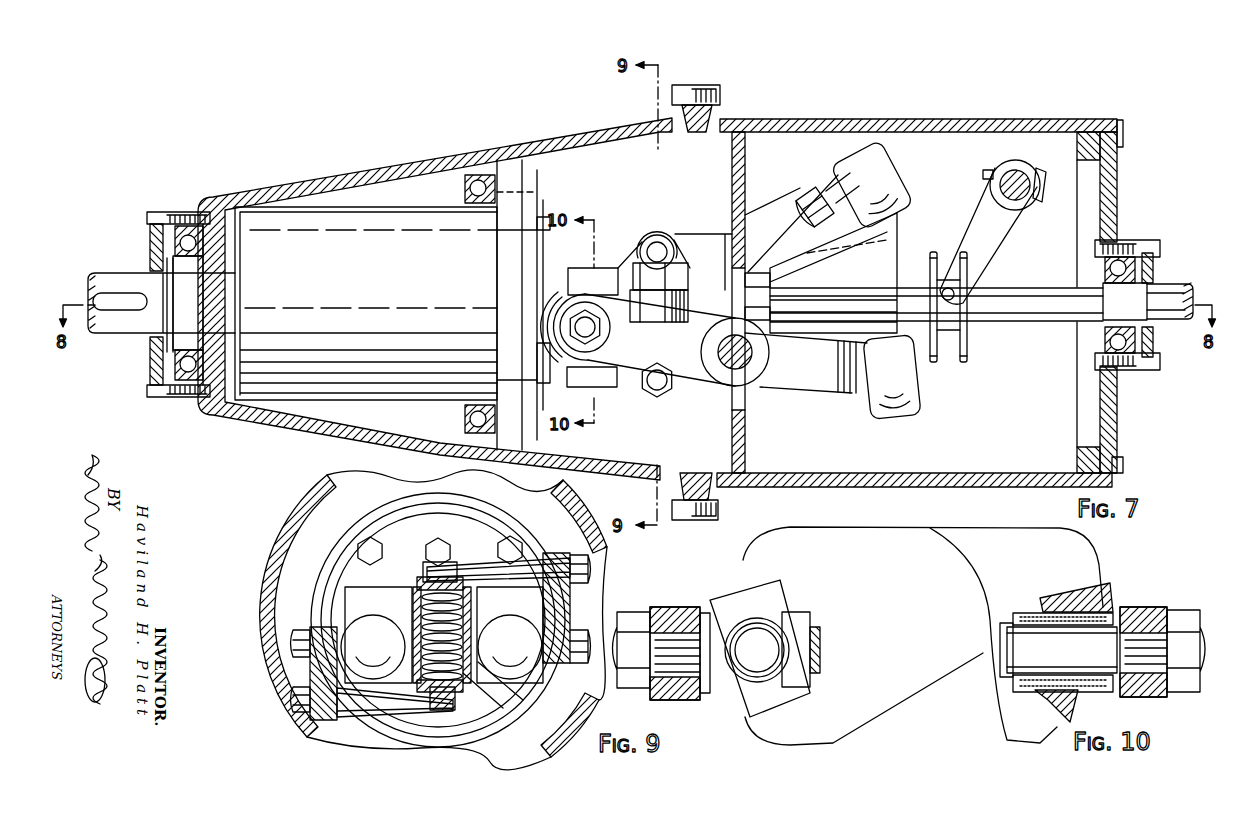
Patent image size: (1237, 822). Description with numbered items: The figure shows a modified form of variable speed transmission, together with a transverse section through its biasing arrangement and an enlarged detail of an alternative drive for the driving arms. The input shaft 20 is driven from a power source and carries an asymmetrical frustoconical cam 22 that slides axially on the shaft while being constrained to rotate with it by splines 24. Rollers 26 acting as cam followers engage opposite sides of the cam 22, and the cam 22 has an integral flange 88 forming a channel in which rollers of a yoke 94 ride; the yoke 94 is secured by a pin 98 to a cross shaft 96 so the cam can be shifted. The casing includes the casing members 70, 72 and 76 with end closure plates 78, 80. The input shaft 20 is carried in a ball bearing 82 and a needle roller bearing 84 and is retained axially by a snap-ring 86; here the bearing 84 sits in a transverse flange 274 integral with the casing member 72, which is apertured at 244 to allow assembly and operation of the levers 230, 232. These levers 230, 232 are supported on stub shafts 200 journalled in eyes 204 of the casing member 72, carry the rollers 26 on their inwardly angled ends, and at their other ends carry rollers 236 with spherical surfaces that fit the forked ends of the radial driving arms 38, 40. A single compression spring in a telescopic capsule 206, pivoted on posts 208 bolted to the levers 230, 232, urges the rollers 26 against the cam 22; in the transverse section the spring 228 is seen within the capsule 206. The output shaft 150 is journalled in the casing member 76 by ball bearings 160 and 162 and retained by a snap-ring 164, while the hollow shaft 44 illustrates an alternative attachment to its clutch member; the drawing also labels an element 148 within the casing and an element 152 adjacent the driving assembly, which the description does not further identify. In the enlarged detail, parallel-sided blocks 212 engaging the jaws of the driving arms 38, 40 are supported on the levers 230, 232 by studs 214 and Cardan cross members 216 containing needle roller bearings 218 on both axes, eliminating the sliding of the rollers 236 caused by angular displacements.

In FIG. 7, the input shaft 20 is at (1160, 292).
In FIG. 7, the asymmetrical frustoconical cam 22 is at (888, 238).
In FIG. 7, the splines 24 is at (1018, 288).
In FIG. 7, the rollers 26 is at (858, 160).
In FIG. 7, the radial driving arm 38 is at (600, 278).
In FIG. 9, the radial driving arm 38 is at (360, 603).
In FIG. 10, the radial driving arm 38 is at (747, 555).
In FIG. 9, the radial driving arm 40 is at (523, 600).
In FIG. 10, the radial driving arm 40 is at (1078, 558).
In FIG. 7, the hollow shaft 44 is at (550, 355).
In FIG. 7, the casing member 70 is at (1115, 178).
In FIG. 7, the casing member 72 is at (950, 132).
In FIG. 7, the casing member 76 is at (412, 162).
In FIG. 9, the casing member 76 is at (318, 491).
In FIG. 7, the end closure plate 78 is at (1140, 243).
In FIG. 7, the end closure plate 80 is at (168, 212).
In FIG. 7, the ball bearing 82 is at (1150, 264).
In FIG. 7, the needle roller bearing 84 is at (760, 283).
In FIG. 7, the snap-ring 86 is at (1142, 301).
In FIG. 7, the integral flange 88 is at (932, 280).
In FIG. 7, the yoke 94 is at (1010, 226).
In FIG. 7, the cross shaft 96 is at (1017, 167).
In FIG. 7, the pin 98 is at (1038, 203).
In FIG. 7, the motor 148 is at (313, 220).
In FIG. 7, the output shaft 150 is at (139, 275).
In FIG. 7, the end plate 152 is at (528, 417).
In FIG. 9, the end plate 152 is at (397, 523).
In FIG. 7, the ball bearing 160 is at (152, 241).
In FIG. 7, the ball bearing 162 is at (467, 190).
In FIG. 9, the ball bearing 162 is at (372, 519).
In FIG. 7, the snap-ring 164 is at (170, 270).
In FIG. 7, the stub shaft 200 is at (718, 355).
In FIG. 7, the eye 204 is at (726, 228).
In FIG. 7, the telescopic capsule 206 is at (650, 300).
In FIG. 9, the telescopic capsule 206 is at (425, 585).
In FIG. 7, the post 208 is at (660, 240).
In FIG. 9, the post 208 is at (487, 565).
In FIG. 10, the parallel-sided block 212 is at (737, 593).
In FIG. 10, the stud 214 is at (690, 633).
In FIG. 10, the Cardan cross member 216 is at (747, 687).
In FIG. 10, the needle roller bearings 218 is at (752, 668).
In FIG. 9, the spring 228 is at (420, 600).
In FIG. 7, the lever 230 is at (807, 380).
In FIG. 9, the lever 230 is at (310, 668).
In FIG. 10, the lever 230 is at (672, 693).
In FIG. 7, the lever 232 is at (797, 178).
In FIG. 9, the lever 232 is at (575, 613).
In FIG. 10, the lever 232 is at (602, 615).
In FIG. 7, the roller 236 is at (557, 300).
In FIG. 9, the roller 236 is at (310, 695).
In FIG. 7, the aperture 244 is at (742, 403).
In FIG. 7, the transverse flange 274 is at (733, 182).